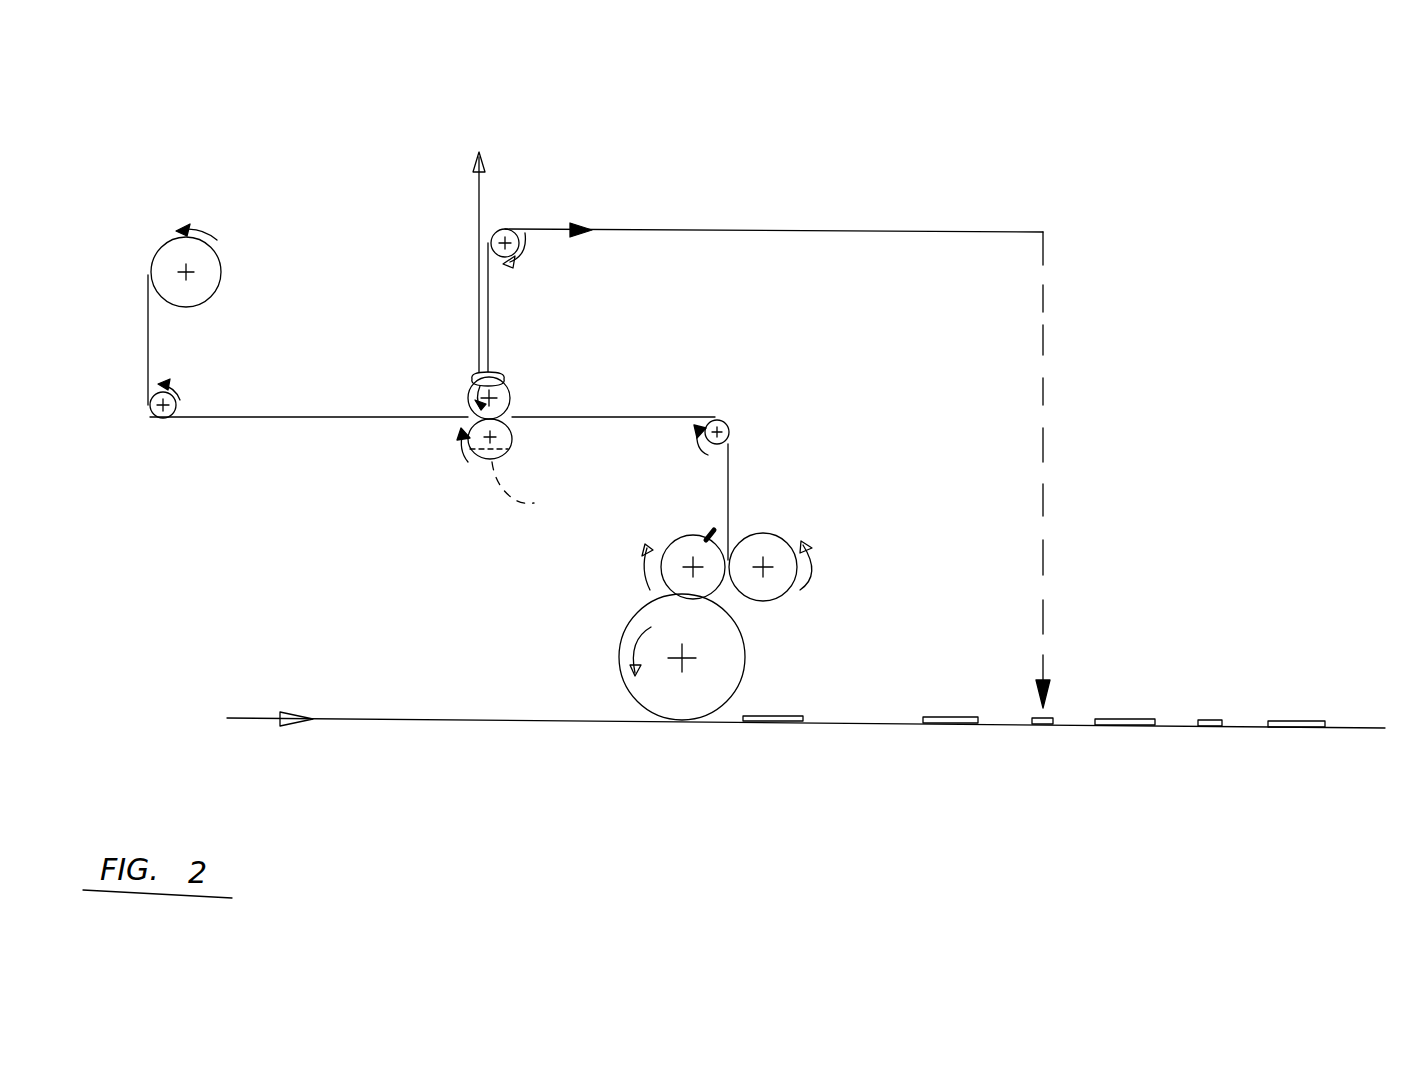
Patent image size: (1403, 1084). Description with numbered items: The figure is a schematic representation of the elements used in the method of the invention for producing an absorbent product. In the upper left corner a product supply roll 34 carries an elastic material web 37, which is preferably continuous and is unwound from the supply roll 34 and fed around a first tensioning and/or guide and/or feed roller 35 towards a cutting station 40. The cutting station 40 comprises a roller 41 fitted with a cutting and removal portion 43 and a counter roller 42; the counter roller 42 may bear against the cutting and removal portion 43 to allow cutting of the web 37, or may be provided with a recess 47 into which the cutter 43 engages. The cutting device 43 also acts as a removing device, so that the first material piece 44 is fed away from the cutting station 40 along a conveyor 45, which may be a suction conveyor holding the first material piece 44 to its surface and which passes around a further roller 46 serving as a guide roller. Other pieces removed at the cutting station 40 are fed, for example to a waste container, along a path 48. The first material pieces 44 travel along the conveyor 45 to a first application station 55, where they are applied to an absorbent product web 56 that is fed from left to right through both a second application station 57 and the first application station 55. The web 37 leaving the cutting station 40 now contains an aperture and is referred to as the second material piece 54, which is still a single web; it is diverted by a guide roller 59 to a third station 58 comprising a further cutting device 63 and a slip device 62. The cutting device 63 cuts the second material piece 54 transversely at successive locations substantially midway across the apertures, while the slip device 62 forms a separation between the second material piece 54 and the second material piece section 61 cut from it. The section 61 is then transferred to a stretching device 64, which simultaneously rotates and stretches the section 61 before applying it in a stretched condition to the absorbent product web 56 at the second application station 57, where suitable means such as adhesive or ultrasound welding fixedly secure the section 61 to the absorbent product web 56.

The product supply roll 34 is at (213, 258).
The first tensioning and/or guide and/or feed roller 35 is at (168, 418).
The elastic material web 37 is at (148, 341).
The cutting station 40 is at (435, 432).
The roller 41 is at (505, 392).
The counter roller 42 is at (512, 440).
The cutting and removal portion 43 is at (495, 372).
The first material piece 44 is at (1046, 718).
The conveyor 45 is at (585, 229).
The further roller 46 is at (517, 229).
The recess 47 is at (535, 491).
The path 48 is at (477, 210).
The second material piece 54 is at (607, 417).
The first application station 55 is at (1068, 625).
The absorbent product web 56 is at (398, 722).
The second application station 57 is at (698, 742).
The third station 58 is at (750, 528).
The guide roller 59 is at (722, 420).
The second material piece section 61 is at (793, 722).
The slip device 62 is at (773, 548).
The further cutting device 63 is at (675, 543).
The stretching device 64 is at (745, 665).